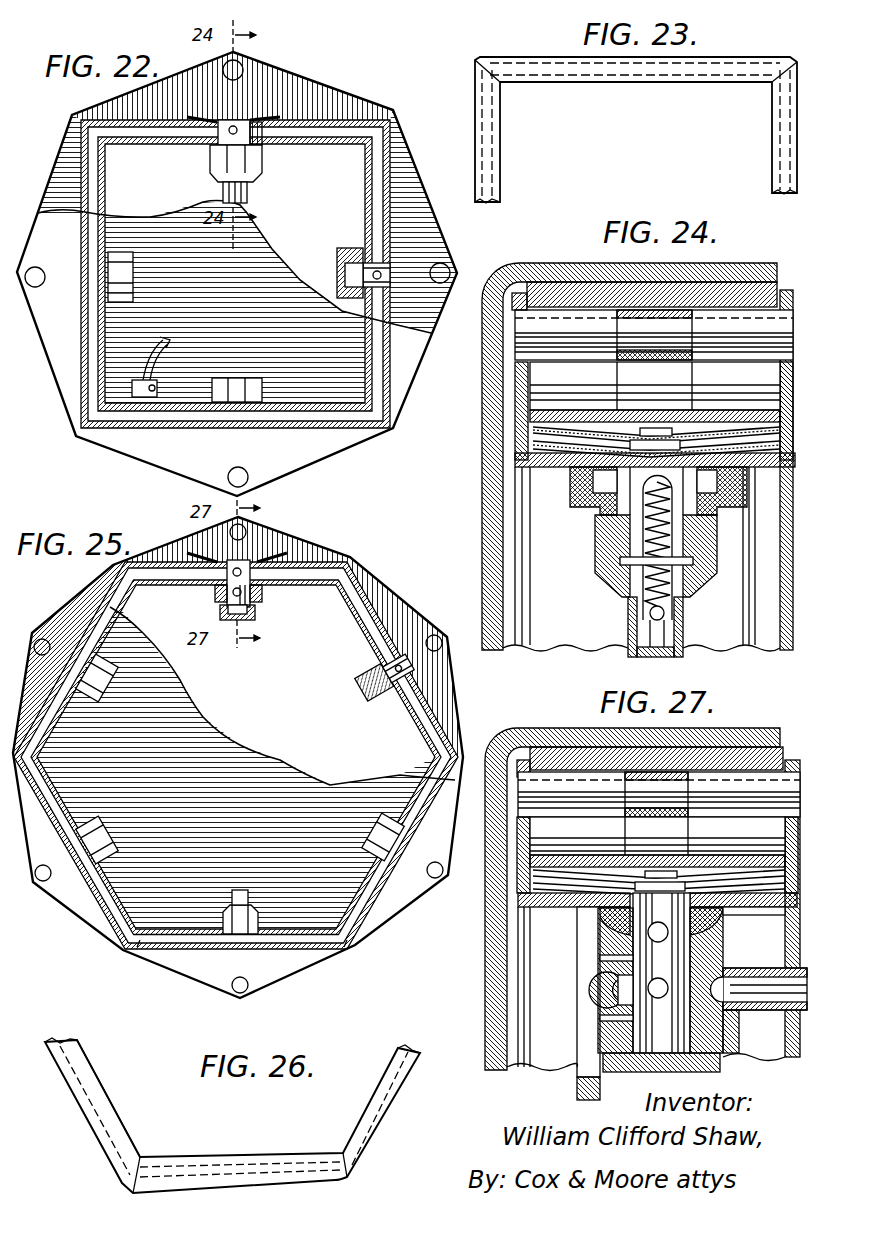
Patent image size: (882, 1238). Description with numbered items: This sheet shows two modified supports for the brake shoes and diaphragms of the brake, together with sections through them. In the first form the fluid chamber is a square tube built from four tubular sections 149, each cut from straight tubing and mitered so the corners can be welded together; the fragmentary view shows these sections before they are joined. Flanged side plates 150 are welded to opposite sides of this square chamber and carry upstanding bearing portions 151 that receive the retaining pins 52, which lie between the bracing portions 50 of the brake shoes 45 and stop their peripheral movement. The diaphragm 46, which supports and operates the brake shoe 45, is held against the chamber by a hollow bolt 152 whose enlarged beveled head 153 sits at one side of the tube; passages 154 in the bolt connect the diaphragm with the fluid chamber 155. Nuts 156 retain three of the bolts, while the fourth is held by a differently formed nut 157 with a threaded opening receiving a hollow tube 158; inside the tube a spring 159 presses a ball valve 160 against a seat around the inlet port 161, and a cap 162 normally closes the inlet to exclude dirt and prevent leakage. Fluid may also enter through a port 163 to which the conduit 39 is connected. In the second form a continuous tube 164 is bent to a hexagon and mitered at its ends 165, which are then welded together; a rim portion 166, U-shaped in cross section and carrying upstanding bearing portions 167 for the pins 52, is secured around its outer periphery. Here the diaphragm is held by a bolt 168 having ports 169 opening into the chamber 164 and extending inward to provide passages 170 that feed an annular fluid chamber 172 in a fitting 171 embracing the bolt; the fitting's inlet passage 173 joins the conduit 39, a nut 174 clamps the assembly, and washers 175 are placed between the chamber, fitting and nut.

In FIG. 22, the conduit 39 is at (168, 361).
In FIG. 24, the brake shoe 45 is at (540, 385).
In FIG. 24, the diaphragm 46 is at (533, 440).
In FIG. 27, the diaphragm 46 is at (530, 890).
In FIG. 27, the bracing portion 50 is at (748, 827).
In FIG. 24, the retaining pin 52 is at (732, 322).
In FIG. 27, the retaining pin 52 is at (712, 780).
In FIG. 23, the tubular section 149 is at (568, 83).
In FIG. 22, the flanged side plate 150 is at (97, 227).
In FIG. 24, the flanged side plate 150 is at (570, 483).
In FIG. 22, the upstanding bearing portion 151 is at (300, 78).
In FIG. 24, the upstanding bearing portion 151 is at (520, 293).
In FIG. 22, the hollow bolt 152 is at (262, 138).
In FIG. 24, the hollow bolt 152 is at (627, 515).
In FIG. 22, the enlarged beveled head 153 is at (218, 122).
In FIG. 24, the enlarged beveled head 153 is at (607, 477).
In FIG. 22, the passage 154 is at (252, 121).
In FIG. 24, the passage 154 is at (710, 507).
In FIG. 24, the fluid chamber 155 is at (587, 498).
In FIG. 22, the nut 156 is at (345, 250).
In FIG. 25, the nut 156 is at (100, 697).
In FIG. 22, the nut 157 is at (210, 163).
In FIG. 24, the nut 157 is at (705, 580).
In FIG. 25, the nut 157 is at (258, 913).
In FIG. 24, the hollow tube 158 is at (620, 560).
In FIG. 24, the spring 159 is at (650, 587).
In FIG. 24, the ball valve 160 is at (648, 613).
In FIG. 24, the inlet port 161 is at (648, 632).
In FIG. 22, the cap 162 is at (248, 195).
In FIG. 24, the cap 162 is at (677, 633).
In FIG. 25, the cap 162 is at (248, 892).
In FIG. 22, the port 163 is at (143, 403).
In FIG. 25, the tubular section of the chamber 164 is at (433, 740).
In FIG. 27, the tubular section of the chamber 164 is at (722, 913).
In FIG. 25, the mitered end 165 is at (140, 957).
In FIG. 26, the mitered end 165 is at (127, 1188).
In FIG. 25, the rim portion 166 is at (90, 627).
In FIG. 27, the rim portion 166 is at (533, 910).
In FIG. 25, the upstanding bearing portion 167 is at (68, 900).
In FIG. 27, the upstanding bearing portion 167 is at (513, 738).
In FIG. 25, the bolt 168 is at (247, 563).
In FIG. 27, the bolt 168 is at (597, 967).
In FIG. 27, the port 169 is at (610, 930).
In FIG. 25, the passage 170 is at (227, 595).
In FIG. 27, the passage 170 is at (617, 987).
In FIG. 25, the fitting 171 is at (262, 595).
In FIG. 27, the fitting 171 is at (740, 1012).
In FIG. 27, the annular fluid chamber 172 is at (617, 997).
In FIG. 27, the inlet passage 173 is at (745, 980).
In FIG. 25, the nut 174 is at (255, 617).
In FIG. 27, the nut 174 is at (697, 1072).
In FIG. 27, the washer 175 is at (603, 958).